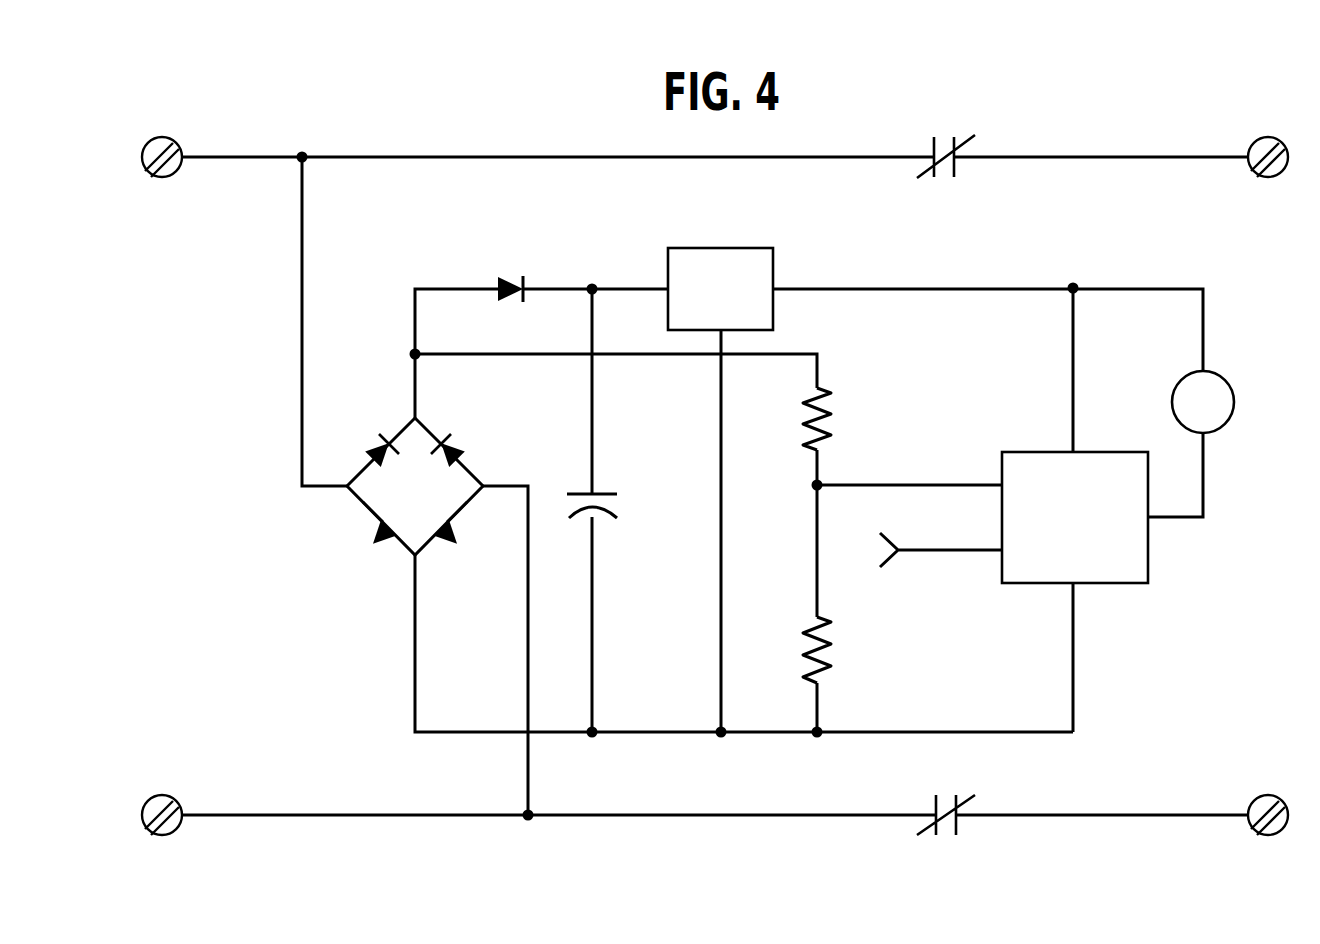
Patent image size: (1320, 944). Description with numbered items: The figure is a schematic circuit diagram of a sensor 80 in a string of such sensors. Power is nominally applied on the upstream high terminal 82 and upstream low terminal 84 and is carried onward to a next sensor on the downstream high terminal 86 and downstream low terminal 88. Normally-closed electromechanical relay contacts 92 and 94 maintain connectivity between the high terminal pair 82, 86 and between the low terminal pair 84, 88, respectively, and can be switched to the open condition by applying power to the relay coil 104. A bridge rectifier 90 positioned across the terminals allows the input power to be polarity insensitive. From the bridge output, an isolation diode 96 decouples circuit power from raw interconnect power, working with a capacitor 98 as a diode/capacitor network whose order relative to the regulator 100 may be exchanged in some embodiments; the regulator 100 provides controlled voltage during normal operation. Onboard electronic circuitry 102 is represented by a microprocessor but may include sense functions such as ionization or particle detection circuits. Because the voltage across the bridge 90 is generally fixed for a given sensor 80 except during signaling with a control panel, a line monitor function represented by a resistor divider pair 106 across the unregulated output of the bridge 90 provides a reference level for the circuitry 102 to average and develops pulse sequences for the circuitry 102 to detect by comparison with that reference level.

The sensor 80 is at (324, 118).
The upstream high terminal 82 is at (162, 177).
The upstream low terminal 84 is at (162, 795).
The downstream high terminal 86 is at (1262, 177).
The downstream low terminal 88 is at (1268, 796).
The bridge rectifier 90 is at (400, 426).
The relay contact K1A 92 is at (958, 170).
The relay contact K1B 94 is at (932, 807).
The isolation diode 96 is at (506, 278).
The capacitor 98 is at (603, 492).
The regulator 100 is at (721, 248).
The onboard electronic circuitry 102 is at (1028, 452).
The relay coil K1 104 is at (1180, 382).
The resistor divider pair 106 is at (814, 452).